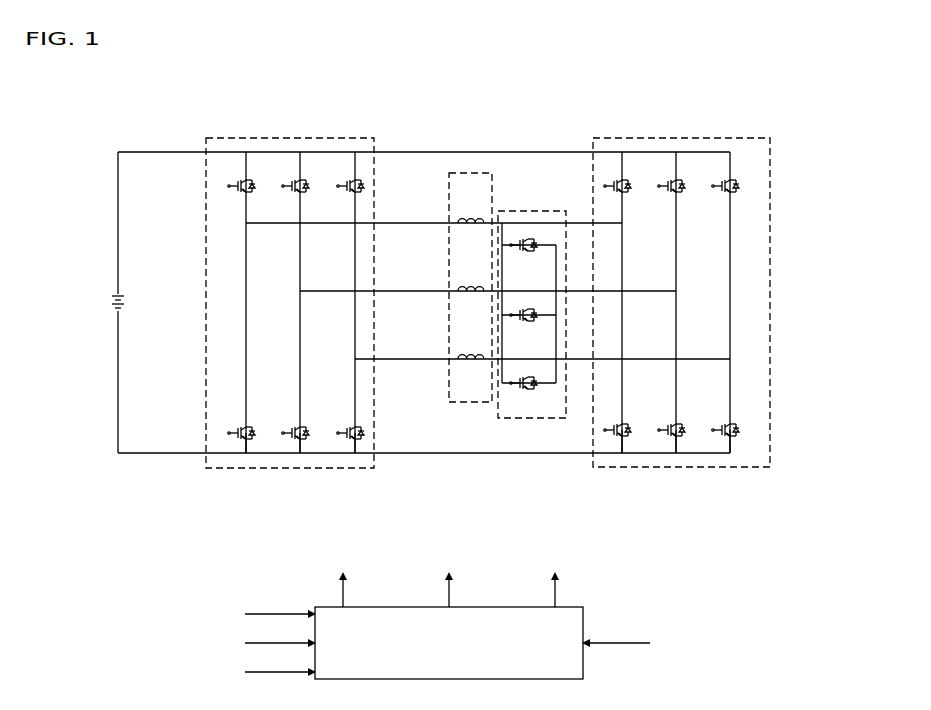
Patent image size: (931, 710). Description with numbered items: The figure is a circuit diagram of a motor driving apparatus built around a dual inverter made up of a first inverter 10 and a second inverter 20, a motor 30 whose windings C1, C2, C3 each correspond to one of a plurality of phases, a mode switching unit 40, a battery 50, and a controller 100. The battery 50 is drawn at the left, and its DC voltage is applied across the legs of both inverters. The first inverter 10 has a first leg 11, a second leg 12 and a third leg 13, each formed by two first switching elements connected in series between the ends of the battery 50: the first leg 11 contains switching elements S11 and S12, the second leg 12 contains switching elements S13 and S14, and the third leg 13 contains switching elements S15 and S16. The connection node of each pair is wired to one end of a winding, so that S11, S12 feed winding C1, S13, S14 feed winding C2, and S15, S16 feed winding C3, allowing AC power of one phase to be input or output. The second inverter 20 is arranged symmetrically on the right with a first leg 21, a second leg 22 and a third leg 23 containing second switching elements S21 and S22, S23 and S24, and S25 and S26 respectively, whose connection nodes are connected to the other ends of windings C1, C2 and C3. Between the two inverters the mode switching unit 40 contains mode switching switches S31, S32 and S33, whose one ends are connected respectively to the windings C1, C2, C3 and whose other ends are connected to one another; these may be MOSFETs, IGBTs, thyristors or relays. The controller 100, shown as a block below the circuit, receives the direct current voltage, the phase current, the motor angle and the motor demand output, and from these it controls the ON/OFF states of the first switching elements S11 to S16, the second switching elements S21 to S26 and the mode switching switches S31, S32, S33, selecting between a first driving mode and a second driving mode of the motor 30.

The first inverter 10 is at (295, 280).
The second inverter 20 is at (681, 279).
The motor 30 is at (470, 258).
The mode switching unit 40 is at (532, 294).
The battery 50 is at (115, 295).
The first leg 11 is at (246, 470).
The second leg 12 is at (300, 470).
The third leg 13 is at (355, 470).
The first leg 21 is at (622, 469).
The second leg 22 is at (676, 469).
The third leg 23 is at (730, 469).
The controller 100 is at (583, 607).
The first switching element S11 is at (252, 195).
The first switching element S12 is at (251, 423).
The first switching element S13 is at (306, 195).
The first switching element S14 is at (305, 423).
The first switching element S15 is at (361, 195).
The first switching element S16 is at (360, 423).
The second switching element S21 is at (627, 196).
The second switching element S22 is at (627, 422).
The second switching element S23 is at (681, 196).
The second switching element S24 is at (681, 422).
The second switching element S25 is at (736, 196).
The second switching element S26 is at (736, 422).
The mode switching switch S31 is at (525, 257).
The mode switching switch S32 is at (525, 326).
The mode switching switch S33 is at (525, 394).
The winding C1 is at (471, 205).
The winding C2 is at (471, 274).
The winding C3 is at (471, 342).